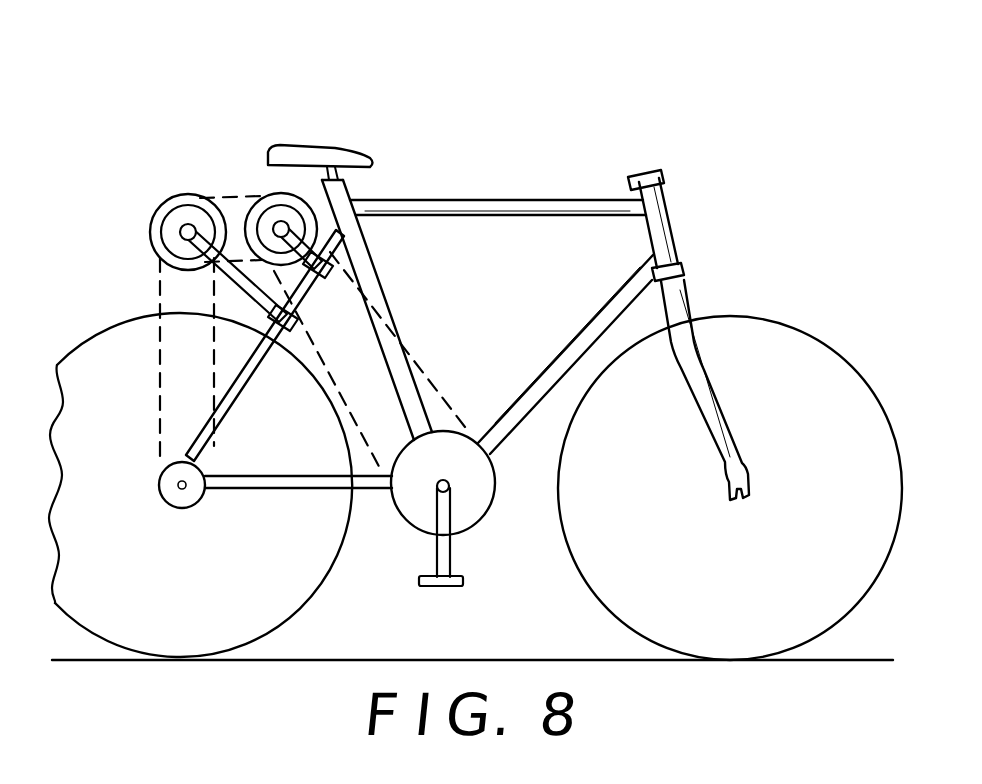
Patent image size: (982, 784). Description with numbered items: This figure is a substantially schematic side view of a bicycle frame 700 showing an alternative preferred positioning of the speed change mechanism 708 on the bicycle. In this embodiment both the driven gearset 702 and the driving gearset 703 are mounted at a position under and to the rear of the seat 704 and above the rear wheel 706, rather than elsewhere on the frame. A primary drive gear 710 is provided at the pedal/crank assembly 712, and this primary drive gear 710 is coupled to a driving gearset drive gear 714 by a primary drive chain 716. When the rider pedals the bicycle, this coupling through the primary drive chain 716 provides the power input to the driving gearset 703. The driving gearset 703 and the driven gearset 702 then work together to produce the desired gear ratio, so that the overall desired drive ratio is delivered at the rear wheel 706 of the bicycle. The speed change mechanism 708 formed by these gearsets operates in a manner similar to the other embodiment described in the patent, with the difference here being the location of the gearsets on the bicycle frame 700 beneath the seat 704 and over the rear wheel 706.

The bicycle frame 700 is at (490, 129).
The driven gearset 702 is at (165, 203).
The driving gearset 703 is at (274, 190).
The seat 704 is at (302, 157).
The rear wheel 706 is at (98, 348).
The speed change mechanism 708 is at (136, 242).
The primary drive gear 710 is at (412, 510).
The pedal/crank assembly 712 is at (445, 553).
The driving gearset drive gear 714 is at (242, 199).
The primary drive chain 716 is at (428, 380).